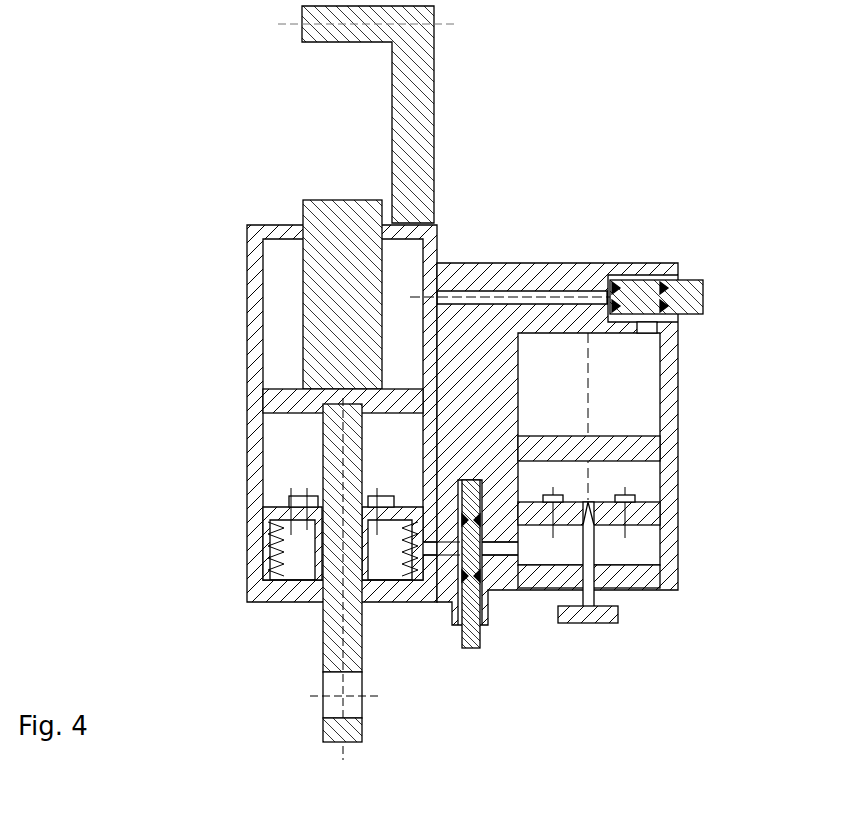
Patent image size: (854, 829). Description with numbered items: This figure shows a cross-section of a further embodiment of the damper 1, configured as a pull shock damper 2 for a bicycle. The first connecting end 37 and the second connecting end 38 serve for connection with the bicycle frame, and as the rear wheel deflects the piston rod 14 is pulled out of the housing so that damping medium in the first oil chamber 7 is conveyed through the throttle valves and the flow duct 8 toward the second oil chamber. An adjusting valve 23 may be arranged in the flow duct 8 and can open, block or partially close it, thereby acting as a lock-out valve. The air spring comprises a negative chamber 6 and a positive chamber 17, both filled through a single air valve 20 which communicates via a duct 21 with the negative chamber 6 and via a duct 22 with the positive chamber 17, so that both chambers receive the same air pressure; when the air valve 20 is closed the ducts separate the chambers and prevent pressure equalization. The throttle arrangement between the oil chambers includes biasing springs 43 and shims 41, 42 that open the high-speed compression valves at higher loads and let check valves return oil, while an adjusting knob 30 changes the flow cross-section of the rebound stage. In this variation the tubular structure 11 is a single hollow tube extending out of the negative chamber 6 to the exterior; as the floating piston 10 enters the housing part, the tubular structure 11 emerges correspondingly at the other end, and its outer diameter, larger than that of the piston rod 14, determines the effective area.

The damper 1 is at (218, 168).
The pull shock damper 2 is at (200, 228).
The negative chamber 6 is at (280, 360).
The first oil chamber 7 is at (285, 470).
The flow duct 8 is at (445, 582).
The floating piston 10 is at (275, 405).
The tubular structure 11 is at (320, 212).
The piston rod 14 is at (322, 650).
The positive chamber 17 is at (635, 400).
The air valve 20 is at (707, 283).
The duct 21 is at (500, 262).
The duct 22 is at (650, 338).
The adjusting valve 23 is at (484, 650).
The adjusting knob 30 is at (620, 628).
The first connecting end 37 is at (436, 12).
The second connecting end 38 is at (366, 748).
The shim 41 is at (650, 495).
The shim 42 is at (386, 500).
The spring 43 is at (270, 560).